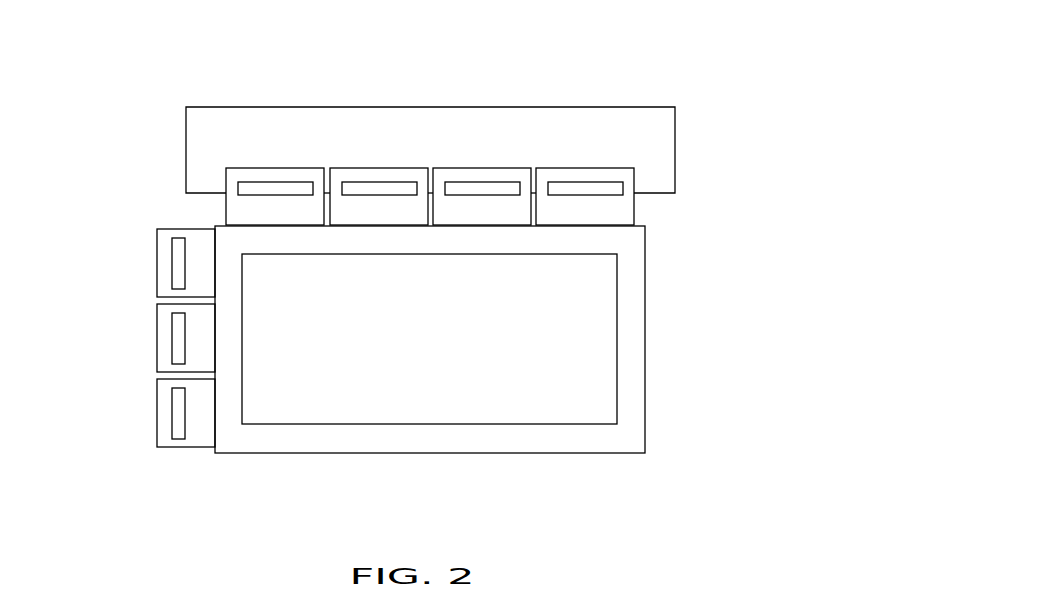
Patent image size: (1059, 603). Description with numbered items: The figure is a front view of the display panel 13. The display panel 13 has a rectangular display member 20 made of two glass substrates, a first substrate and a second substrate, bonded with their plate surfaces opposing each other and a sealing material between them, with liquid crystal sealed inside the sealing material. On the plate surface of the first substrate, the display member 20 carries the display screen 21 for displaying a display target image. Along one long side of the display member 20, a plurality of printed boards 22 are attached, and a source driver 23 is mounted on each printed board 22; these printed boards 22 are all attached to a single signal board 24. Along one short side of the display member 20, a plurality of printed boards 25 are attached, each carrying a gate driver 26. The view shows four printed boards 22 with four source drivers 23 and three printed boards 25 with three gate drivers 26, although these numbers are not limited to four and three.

The display panel 13 is at (730, 43).
The display member 20 is at (633, 287).
The display screen 21 is at (597, 360).
The printed board 22 is at (248, 172).
The source driver 23 is at (280, 187).
The signal board 24 is at (657, 137).
The printed board 25 is at (162, 241).
The gate driver 26 is at (177, 277).